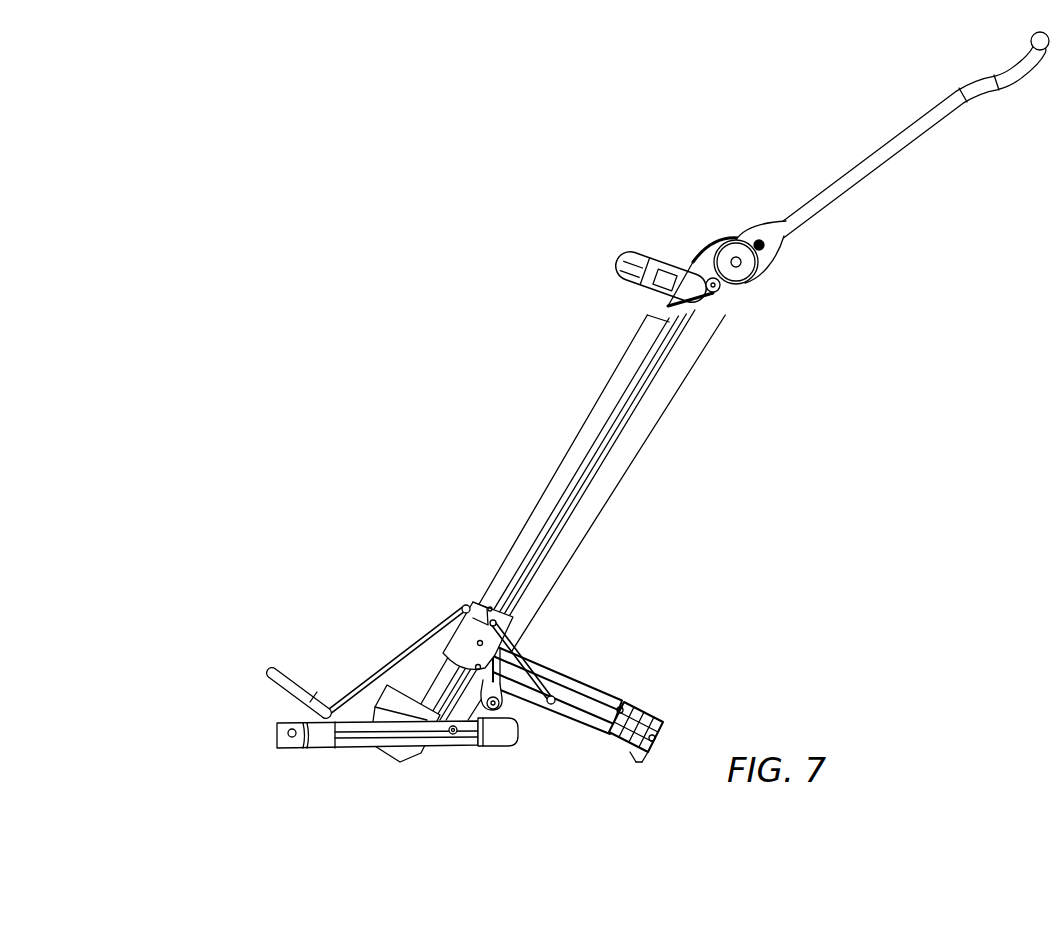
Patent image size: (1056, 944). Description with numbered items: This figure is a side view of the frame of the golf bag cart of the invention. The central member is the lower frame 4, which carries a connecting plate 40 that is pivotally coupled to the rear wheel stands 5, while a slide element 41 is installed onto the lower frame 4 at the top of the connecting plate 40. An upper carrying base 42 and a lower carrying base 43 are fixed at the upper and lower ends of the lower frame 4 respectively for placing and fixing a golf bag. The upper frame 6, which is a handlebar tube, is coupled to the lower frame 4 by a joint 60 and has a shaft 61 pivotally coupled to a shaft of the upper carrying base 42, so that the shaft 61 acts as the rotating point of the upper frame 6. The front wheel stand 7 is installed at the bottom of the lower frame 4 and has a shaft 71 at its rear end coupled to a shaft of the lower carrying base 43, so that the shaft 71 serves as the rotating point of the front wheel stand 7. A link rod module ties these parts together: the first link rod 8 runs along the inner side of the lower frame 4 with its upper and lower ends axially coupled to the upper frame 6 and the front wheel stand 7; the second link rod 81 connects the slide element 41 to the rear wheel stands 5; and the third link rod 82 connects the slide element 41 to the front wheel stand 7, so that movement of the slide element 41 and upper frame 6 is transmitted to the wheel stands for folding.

The lower frame 4 is at (585, 440).
The rear wheel stand 5 is at (577, 688).
The upper frame 6 is at (876, 165).
The front wheel stand 7 is at (362, 735).
The first link rod 8 is at (622, 457).
The connecting plate 40 is at (462, 642).
The slide element 41 is at (490, 607).
The upper carrying base 42 is at (613, 252).
The lower carrying base 43 is at (268, 672).
The joint 60 is at (758, 273).
The shaft 61 is at (717, 290).
The shaft 71 is at (455, 736).
The second link rod 81 is at (530, 658).
The third link rod 82 is at (383, 668).